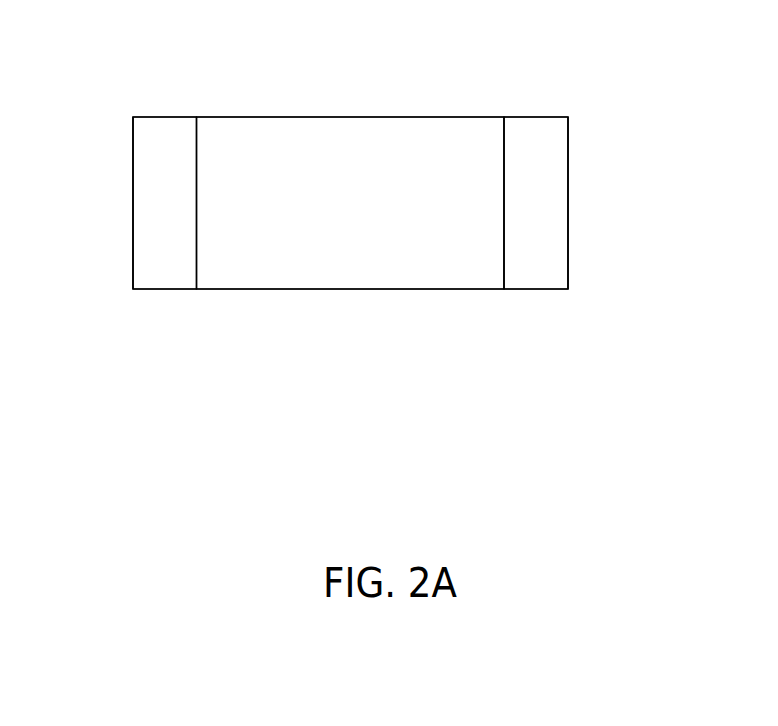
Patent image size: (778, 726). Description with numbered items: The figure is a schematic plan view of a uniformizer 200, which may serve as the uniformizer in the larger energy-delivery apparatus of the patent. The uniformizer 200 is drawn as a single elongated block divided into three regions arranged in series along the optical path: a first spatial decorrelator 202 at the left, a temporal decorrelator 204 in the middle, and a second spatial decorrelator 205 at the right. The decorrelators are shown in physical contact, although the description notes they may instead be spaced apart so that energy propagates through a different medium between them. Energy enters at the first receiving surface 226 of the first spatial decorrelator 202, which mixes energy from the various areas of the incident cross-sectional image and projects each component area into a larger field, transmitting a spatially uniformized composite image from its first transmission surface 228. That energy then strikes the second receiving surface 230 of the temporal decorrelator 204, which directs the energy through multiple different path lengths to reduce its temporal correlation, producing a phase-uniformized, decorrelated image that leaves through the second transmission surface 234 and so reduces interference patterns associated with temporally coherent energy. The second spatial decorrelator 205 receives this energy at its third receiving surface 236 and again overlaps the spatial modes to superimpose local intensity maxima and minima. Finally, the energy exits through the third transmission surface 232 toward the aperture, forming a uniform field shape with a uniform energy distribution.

The uniformizer 200 is at (511, 50).
The first spatial decorrelator 202 is at (182, 218).
The temporal decorrelator 204 is at (373, 218).
The second spatial decorrelator 205 is at (557, 218).
The first receiving surface 226 is at (133, 162).
The first transmission surface 228 is at (196, 143).
The second receiving surface 230 is at (196, 248).
The third transmission surface 232 is at (568, 238).
The second transmission surface 234 is at (504, 151).
The third receiving surface 236 is at (504, 253).